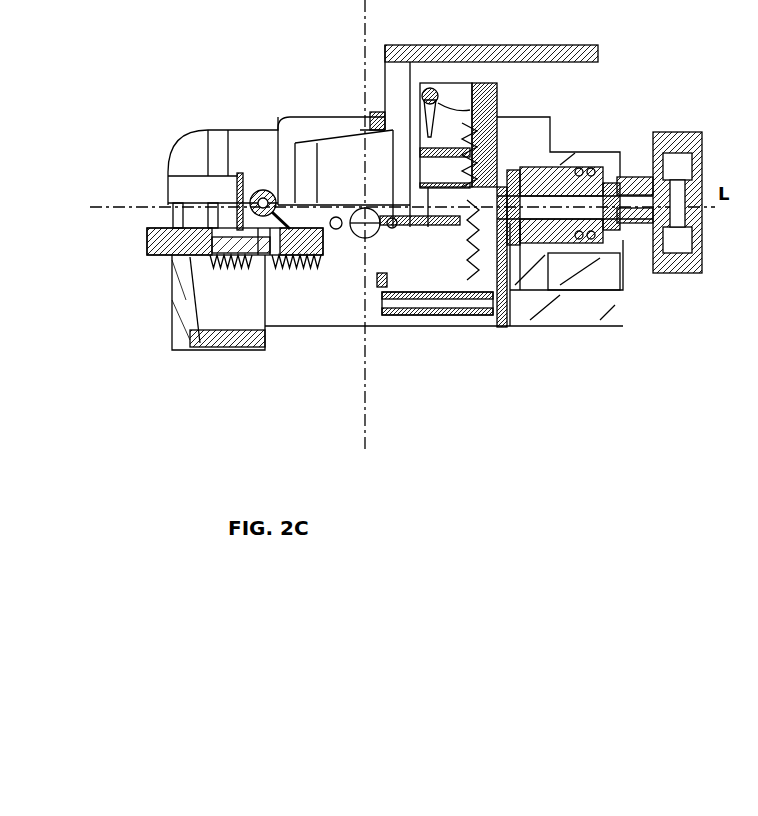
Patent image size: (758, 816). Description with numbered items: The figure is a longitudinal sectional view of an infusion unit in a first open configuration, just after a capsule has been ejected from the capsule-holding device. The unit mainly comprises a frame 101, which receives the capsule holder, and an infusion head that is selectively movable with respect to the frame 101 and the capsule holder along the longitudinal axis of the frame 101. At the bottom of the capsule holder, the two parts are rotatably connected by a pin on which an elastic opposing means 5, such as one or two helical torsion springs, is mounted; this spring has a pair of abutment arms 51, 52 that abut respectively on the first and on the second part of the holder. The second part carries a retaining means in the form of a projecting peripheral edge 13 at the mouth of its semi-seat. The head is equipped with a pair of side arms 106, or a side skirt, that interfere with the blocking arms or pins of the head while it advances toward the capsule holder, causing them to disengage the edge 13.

The frame 101 is at (188, 147).
The elastic opposing means 5 is at (266, 192).
The abutment arm 51 is at (233, 185).
The abutment arm 52 is at (263, 214).
The projecting peripheral edge 13 is at (173, 323).
The side arms 106 is at (422, 228).